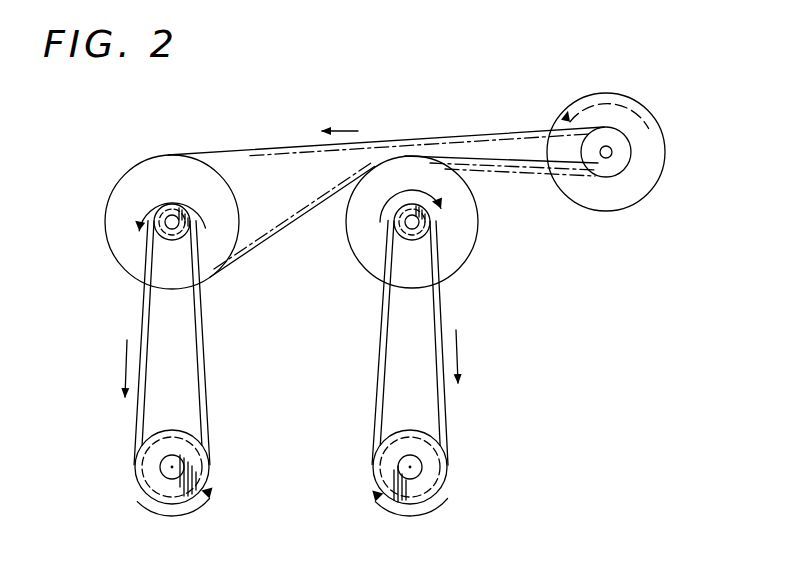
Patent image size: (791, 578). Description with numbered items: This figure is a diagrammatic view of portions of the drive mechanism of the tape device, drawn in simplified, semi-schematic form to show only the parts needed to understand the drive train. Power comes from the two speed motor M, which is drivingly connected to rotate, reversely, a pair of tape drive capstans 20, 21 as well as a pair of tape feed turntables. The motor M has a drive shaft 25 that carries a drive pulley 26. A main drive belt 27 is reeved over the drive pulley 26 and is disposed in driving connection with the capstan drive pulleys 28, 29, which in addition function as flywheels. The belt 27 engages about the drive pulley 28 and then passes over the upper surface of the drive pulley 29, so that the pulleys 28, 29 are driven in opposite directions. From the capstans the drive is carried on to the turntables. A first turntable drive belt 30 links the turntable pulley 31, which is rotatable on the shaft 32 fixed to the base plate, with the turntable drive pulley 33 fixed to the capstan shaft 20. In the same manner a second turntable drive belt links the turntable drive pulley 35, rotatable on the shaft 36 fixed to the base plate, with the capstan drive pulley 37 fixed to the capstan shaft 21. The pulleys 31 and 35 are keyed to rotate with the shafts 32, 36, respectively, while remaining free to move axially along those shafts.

The two speed motor M is at (585, 209).
The tape drive capstan 20 is at (176, 222).
The tape drive capstan 21 is at (420, 221).
The drive shaft 25 is at (611, 158).
The drive pulley 26 is at (620, 152).
The main drive belt 27 is at (259, 138).
The capstan drive pulley 28 is at (116, 250).
The capstan drive pulley 29 is at (357, 259).
The first turntable drive belt 30 is at (206, 401).
The turntable pulley 31 is at (137, 481).
The shaft 32 is at (176, 466).
The turntable drive pulley 33 is at (437, 302).
The turntable drive pulley 35 is at (430, 482).
The shaft 36 is at (414, 465).
The capstan drive pulley 37 is at (395, 226).